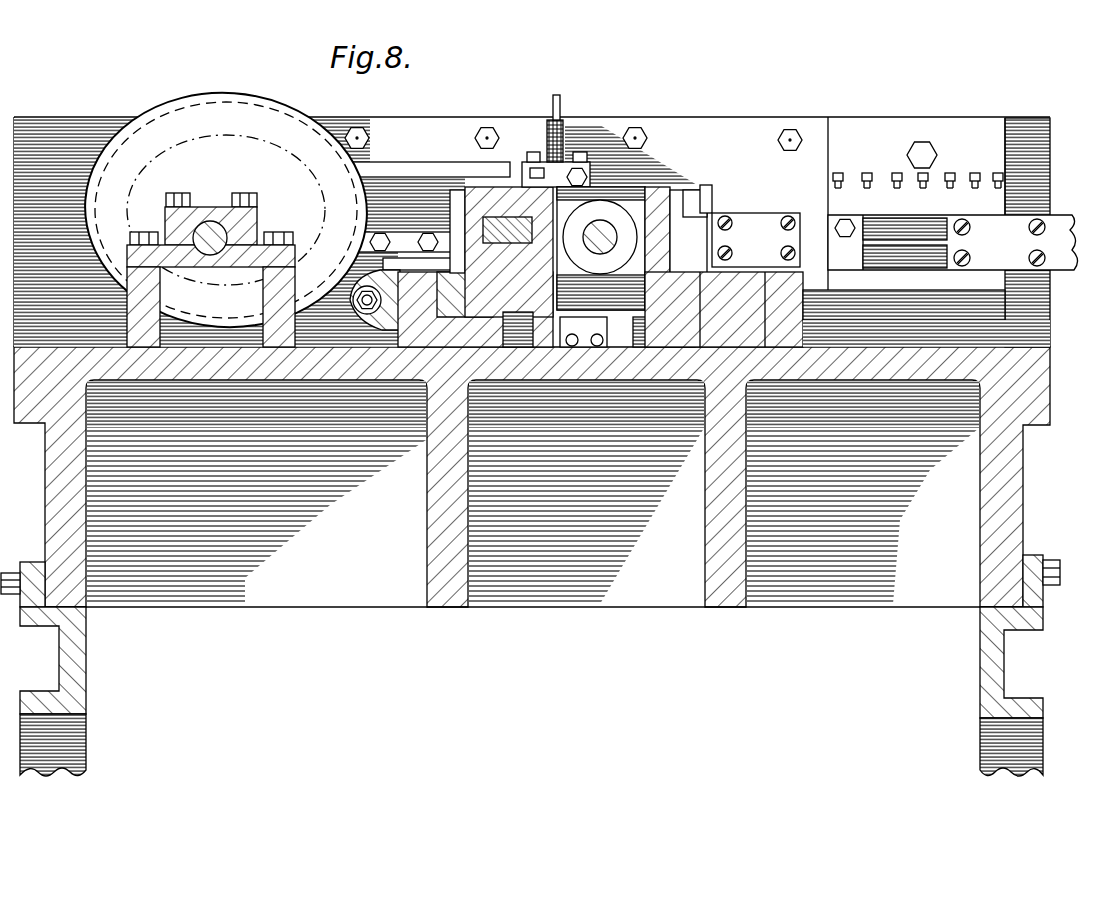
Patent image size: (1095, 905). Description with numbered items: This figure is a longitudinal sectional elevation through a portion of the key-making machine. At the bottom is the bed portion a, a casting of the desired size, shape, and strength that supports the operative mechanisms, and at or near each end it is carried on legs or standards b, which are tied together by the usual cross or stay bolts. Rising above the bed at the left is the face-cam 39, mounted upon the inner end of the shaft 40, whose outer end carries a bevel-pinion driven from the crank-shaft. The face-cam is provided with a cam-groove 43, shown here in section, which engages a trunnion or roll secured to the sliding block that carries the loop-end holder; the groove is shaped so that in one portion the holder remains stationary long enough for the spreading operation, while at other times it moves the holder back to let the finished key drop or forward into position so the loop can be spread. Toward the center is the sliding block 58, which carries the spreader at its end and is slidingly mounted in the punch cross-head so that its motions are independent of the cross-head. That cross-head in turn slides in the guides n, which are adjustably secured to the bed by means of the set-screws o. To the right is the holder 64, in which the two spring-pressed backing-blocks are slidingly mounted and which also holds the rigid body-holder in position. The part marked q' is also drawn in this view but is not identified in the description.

The bed portion a is at (446, 553).
The legs or standards b is at (86, 748).
The face-cam 39 is at (165, 160).
The cam-groove 43 is at (226, 128).
The shaft 40 is at (211, 232).
The sliding block 58 is at (507, 215).
The holder 64 is at (671, 122).
The bearing block q' is at (632, 245).
The guides n is at (714, 275).
The set-screws o is at (745, 262).